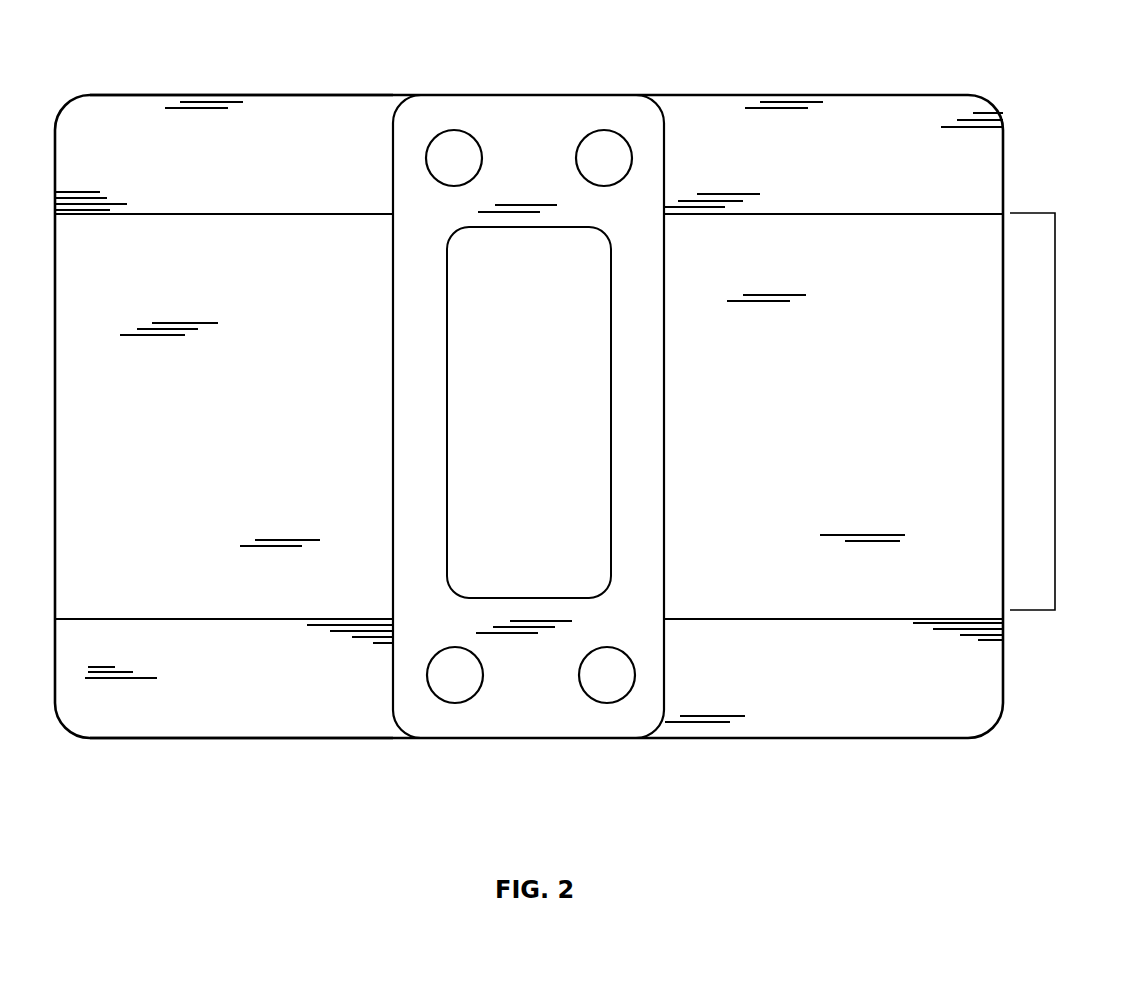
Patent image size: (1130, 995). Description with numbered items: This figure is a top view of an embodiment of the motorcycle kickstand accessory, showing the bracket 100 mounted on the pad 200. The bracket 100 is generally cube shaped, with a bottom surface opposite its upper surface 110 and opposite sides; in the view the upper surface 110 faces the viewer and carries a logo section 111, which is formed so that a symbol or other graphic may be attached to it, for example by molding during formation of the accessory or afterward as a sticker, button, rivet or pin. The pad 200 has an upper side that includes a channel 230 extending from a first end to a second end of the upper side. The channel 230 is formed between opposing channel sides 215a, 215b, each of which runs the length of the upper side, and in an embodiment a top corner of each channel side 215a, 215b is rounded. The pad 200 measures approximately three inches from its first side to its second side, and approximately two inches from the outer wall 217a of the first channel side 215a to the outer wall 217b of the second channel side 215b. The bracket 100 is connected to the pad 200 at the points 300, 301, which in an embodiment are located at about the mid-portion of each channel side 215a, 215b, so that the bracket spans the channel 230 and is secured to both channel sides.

The bracket 100 is at (432, 86).
The upper surface 110 is at (628, 203).
The logo section 111 is at (475, 290).
The pad 200 is at (993, 88).
The first channel side 215a is at (320, 130).
The second channel side 215b is at (348, 698).
The outer wall of first channel side 217a is at (110, 92).
The outer wall of second channel side 217b is at (105, 741).
The channel 230 is at (1055, 413).
The connection points 300 is at (617, 154).
The connection points 301 is at (598, 692).